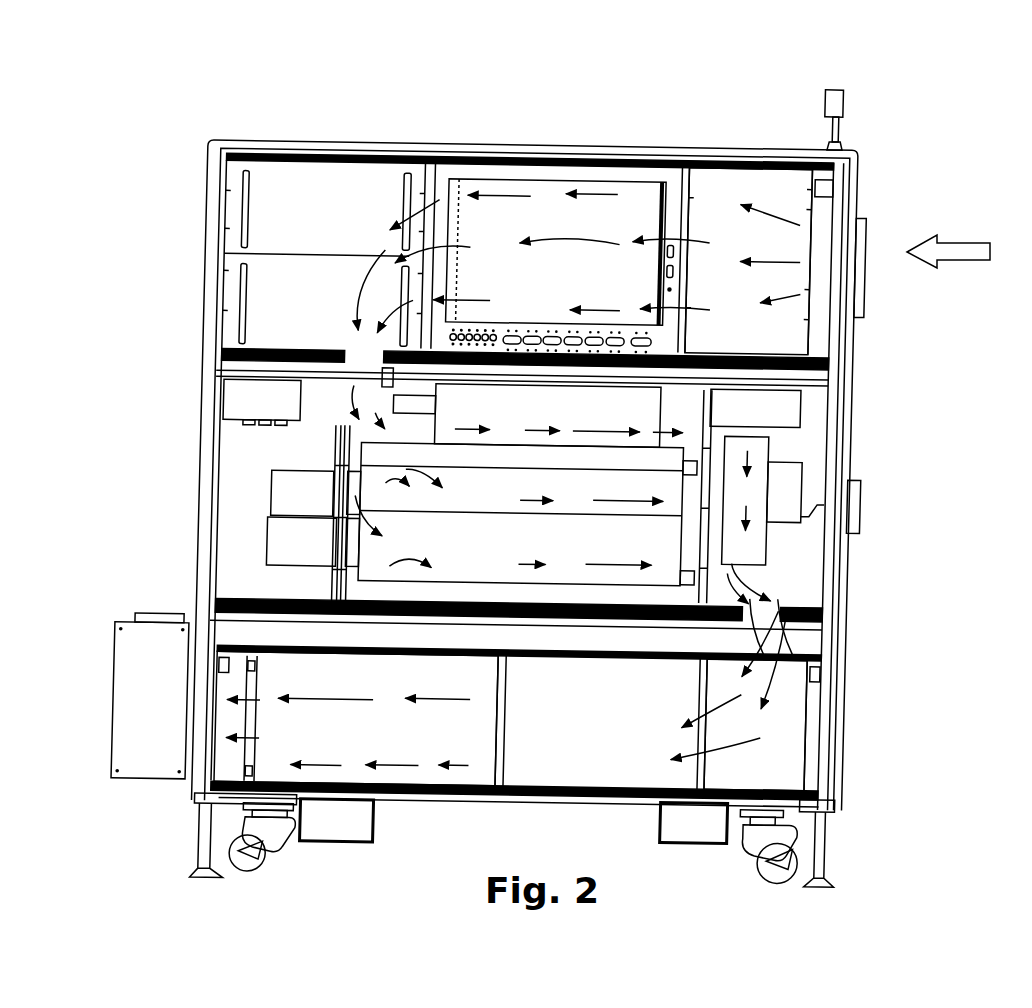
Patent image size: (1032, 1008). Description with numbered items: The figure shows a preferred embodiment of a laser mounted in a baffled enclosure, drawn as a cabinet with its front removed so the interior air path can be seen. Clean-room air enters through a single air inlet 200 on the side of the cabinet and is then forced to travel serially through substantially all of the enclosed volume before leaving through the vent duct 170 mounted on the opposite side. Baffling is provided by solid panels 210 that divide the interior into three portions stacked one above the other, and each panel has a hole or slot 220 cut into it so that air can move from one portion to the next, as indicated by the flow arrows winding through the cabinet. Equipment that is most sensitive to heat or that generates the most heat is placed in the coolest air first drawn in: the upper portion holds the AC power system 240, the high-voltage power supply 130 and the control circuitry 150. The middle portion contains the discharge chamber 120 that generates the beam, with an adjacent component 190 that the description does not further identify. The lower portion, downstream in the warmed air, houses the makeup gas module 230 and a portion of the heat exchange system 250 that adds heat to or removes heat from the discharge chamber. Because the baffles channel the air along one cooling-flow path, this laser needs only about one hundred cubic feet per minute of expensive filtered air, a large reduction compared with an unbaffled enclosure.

The discharge chamber 120 is at (695, 496).
The high-voltage power supply 130 is at (325, 195).
The control circuitry 150 is at (725, 187).
The vent duct 170 is at (117, 677).
The cartridge holder 190 is at (385, 494).
The air inlet 200 is at (863, 285).
The solid panels 210 is at (830, 362).
The hole or slot 220 is at (350, 347).
The makeup gas module 230 is at (430, 753).
The AC power system 240 is at (537, 213).
The heat exchange system 250 is at (787, 765).